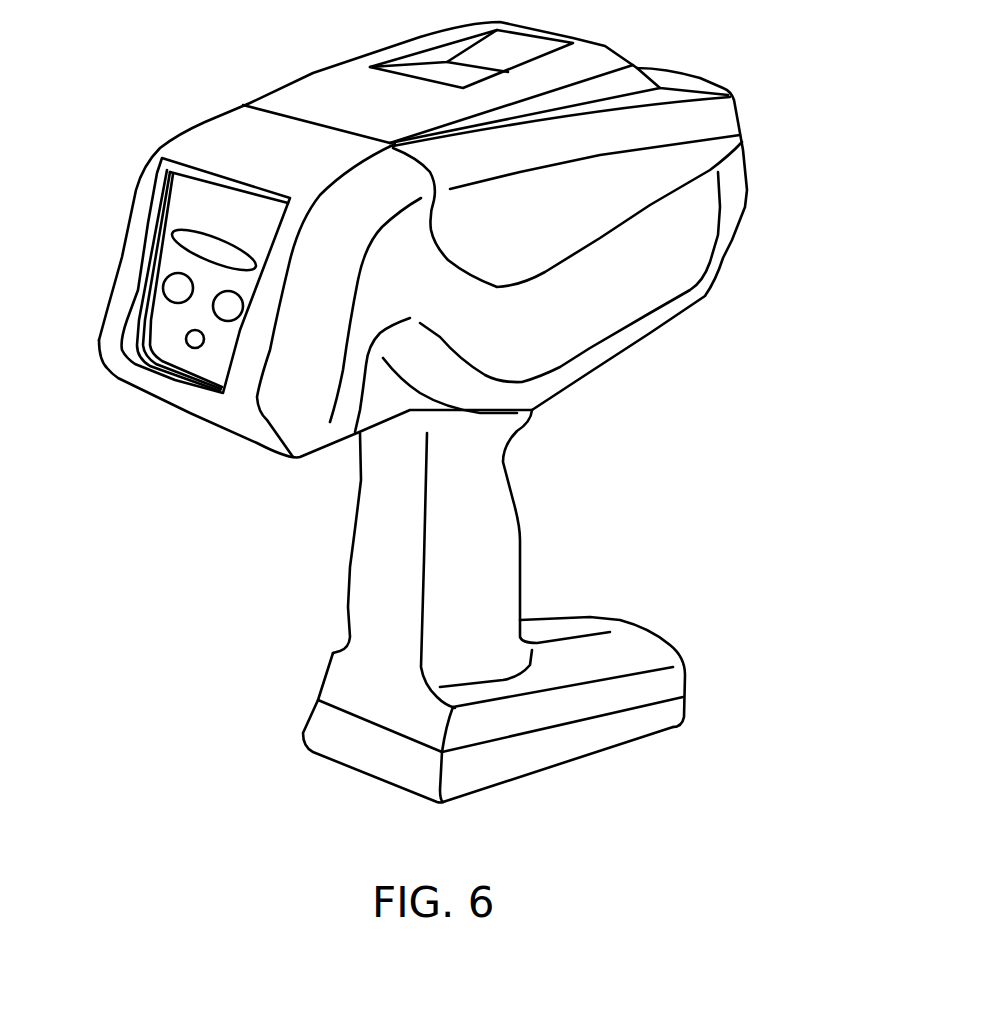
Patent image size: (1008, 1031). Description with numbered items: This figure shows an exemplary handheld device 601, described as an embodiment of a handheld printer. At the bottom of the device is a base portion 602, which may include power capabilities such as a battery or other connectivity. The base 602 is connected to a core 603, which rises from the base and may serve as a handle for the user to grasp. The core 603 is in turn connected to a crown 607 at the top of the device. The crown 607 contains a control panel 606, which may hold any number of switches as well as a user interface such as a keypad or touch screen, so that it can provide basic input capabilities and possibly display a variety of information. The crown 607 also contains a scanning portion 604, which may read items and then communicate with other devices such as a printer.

The handheld device 601 is at (800, 66).
The base portion 602 is at (684, 703).
The core 603 is at (520, 530).
The scanning portion 604 is at (737, 106).
The control panel 606 is at (172, 327).
The crown 607 is at (173, 103).